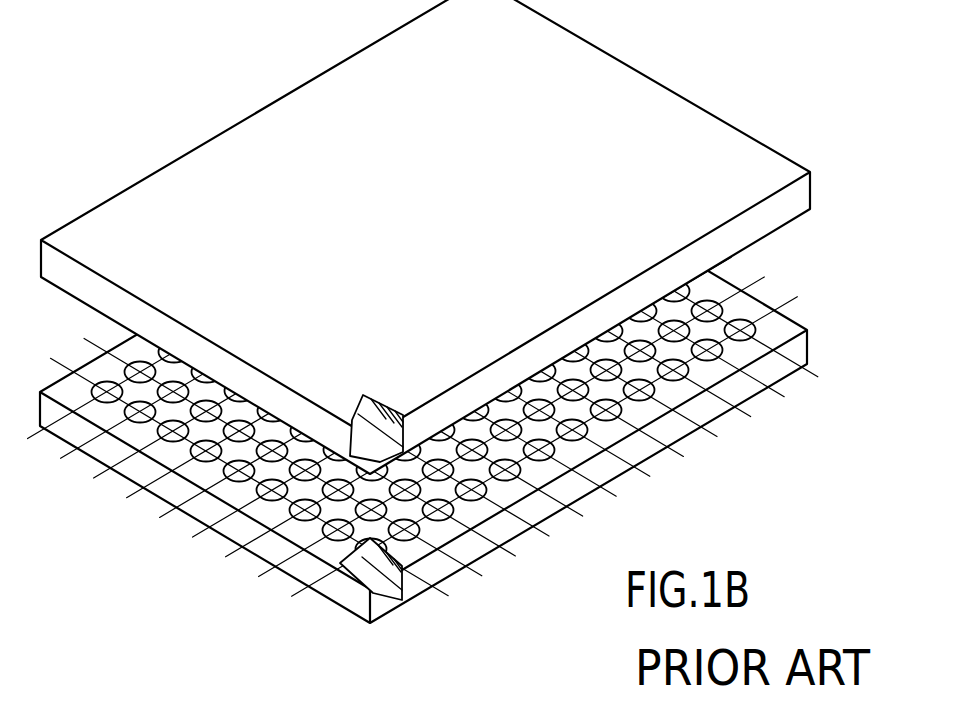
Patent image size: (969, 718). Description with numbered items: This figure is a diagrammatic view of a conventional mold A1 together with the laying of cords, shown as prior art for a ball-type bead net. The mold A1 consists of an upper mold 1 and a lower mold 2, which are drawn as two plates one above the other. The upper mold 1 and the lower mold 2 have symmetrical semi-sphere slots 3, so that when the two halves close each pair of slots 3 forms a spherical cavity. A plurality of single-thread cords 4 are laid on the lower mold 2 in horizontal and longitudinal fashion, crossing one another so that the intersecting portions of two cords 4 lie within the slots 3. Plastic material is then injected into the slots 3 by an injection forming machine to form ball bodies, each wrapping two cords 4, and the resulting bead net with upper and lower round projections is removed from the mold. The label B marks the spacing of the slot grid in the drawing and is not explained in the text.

The upper mold 1 is at (137, 97).
The lower mold 2 is at (805, 347).
The semi-sphere slots 3 is at (373, 553).
The single-thread cords 4 is at (453, 717).
The conventional mold A1 is at (425, 237).
The hole pitch B is at (228, 553).